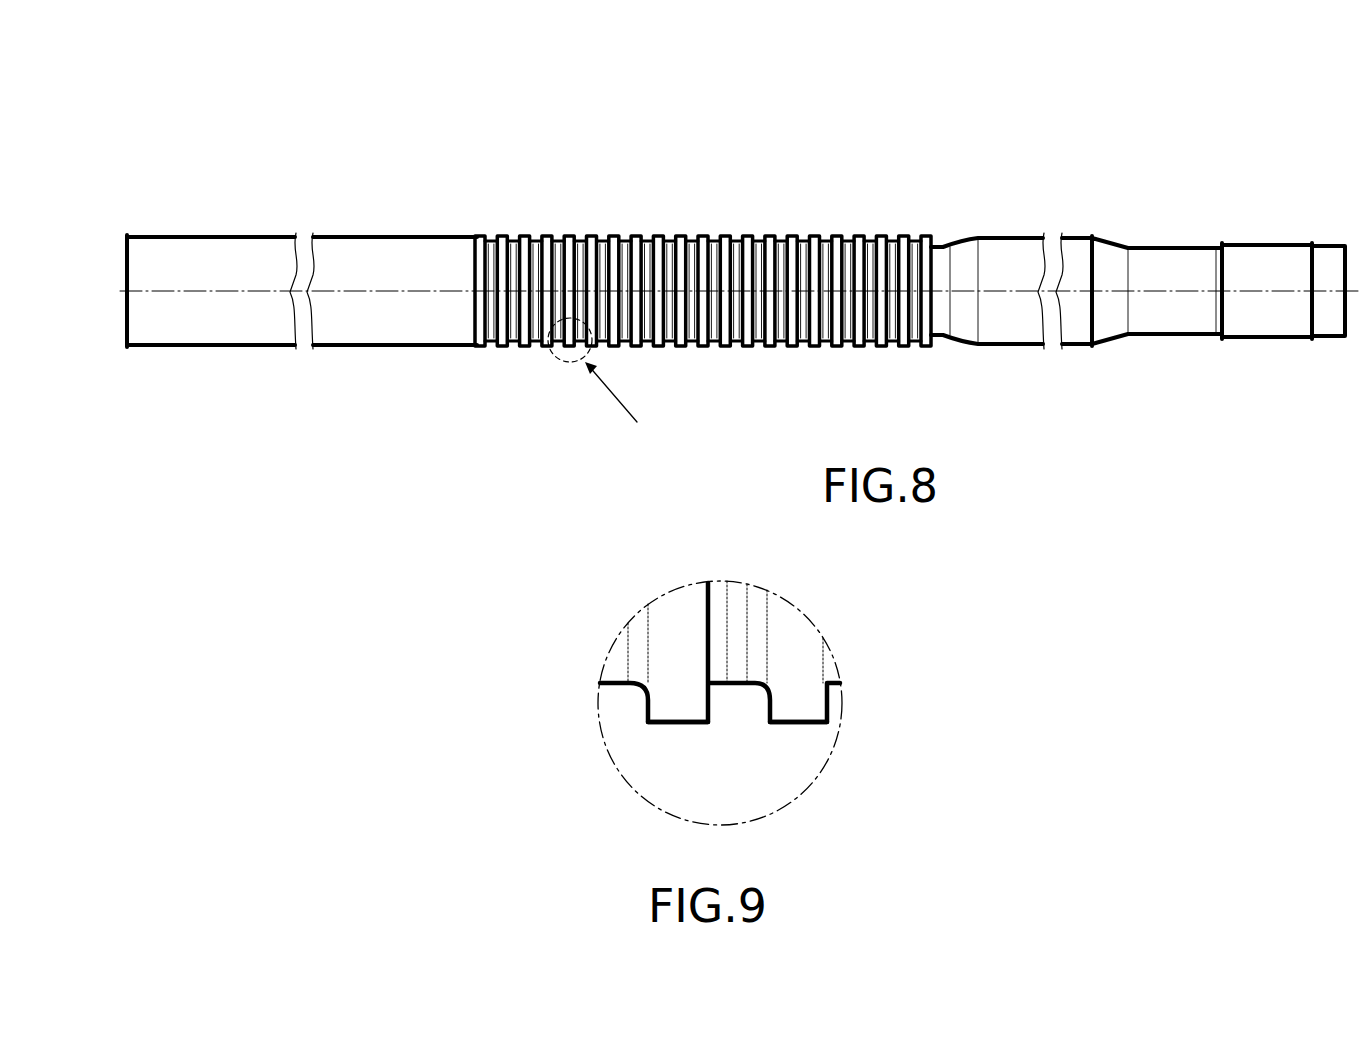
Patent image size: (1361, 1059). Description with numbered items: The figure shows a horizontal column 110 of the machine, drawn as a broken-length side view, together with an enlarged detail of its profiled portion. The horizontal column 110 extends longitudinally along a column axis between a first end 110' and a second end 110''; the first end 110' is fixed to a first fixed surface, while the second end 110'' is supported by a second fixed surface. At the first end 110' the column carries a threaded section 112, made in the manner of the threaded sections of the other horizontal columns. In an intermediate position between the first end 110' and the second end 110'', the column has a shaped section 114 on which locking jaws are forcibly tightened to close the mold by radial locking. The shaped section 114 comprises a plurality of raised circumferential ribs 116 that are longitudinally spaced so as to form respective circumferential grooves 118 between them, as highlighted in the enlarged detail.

In FIG. 8, the horizontal column 110 is at (739, 253).
In FIG. 8, the first end 110' is at (1138, 322).
In FIG. 8, the second end 110'' is at (302, 366).
In FIG. 8, the threaded section 112 is at (1322, 223).
In FIG. 8, the shaped section 114 is at (690, 176).
In FIG. 8, the raised circumferential ribs 116 is at (520, 236).
In FIG. 9, the raised circumferential ribs 116 is at (678, 703).
In FIG. 8, the circumferential grooves 118 is at (703, 219).
In FIG. 9, the circumferential grooves 118 is at (620, 701).